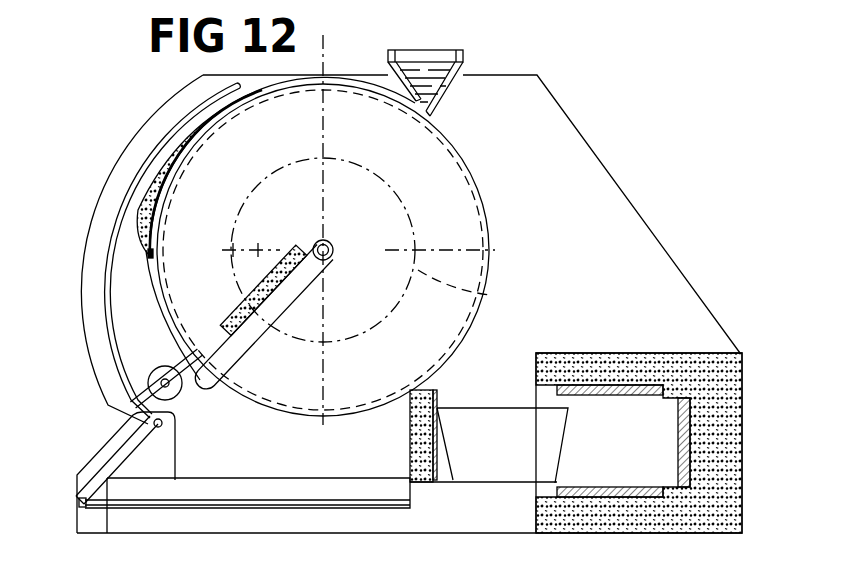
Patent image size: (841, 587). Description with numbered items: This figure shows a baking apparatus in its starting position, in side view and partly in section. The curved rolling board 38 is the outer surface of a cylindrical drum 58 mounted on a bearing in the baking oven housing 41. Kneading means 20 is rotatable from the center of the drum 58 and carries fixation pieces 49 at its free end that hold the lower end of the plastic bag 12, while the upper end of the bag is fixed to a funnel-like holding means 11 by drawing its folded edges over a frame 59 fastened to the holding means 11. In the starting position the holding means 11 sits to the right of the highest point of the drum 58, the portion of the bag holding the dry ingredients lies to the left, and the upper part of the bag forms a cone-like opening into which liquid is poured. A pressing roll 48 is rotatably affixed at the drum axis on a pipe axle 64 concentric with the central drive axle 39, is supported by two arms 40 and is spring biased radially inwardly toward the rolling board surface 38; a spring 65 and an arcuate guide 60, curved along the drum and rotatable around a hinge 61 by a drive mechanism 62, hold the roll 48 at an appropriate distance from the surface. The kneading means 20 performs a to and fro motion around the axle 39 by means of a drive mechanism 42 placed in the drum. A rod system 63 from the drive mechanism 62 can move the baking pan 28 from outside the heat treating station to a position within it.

The funnel-like holding means 11 is at (515, 40).
The plastic bag 12 is at (137, 198).
The kneading means 20 is at (160, 298).
The baking pan 28 is at (508, 455).
The rolling board 38 is at (490, 222).
The central drive axle 39 is at (328, 247).
The arms 40 is at (225, 327).
The baking oven housing 41 is at (560, 100).
The drive mechanism 42 is at (490, 296).
The pressing roll 48 is at (160, 375).
The fixation pieces 49 is at (148, 253).
The drum 58 is at (455, 188).
The frame 59 is at (412, 55).
The arcuate guide 60 is at (150, 148).
The hinge 61 is at (152, 424).
The drive mechanism 62 is at (160, 460).
The rod system 63 is at (142, 500).
The pipe axle 64 is at (319, 240).
The spring 65 is at (358, 230).